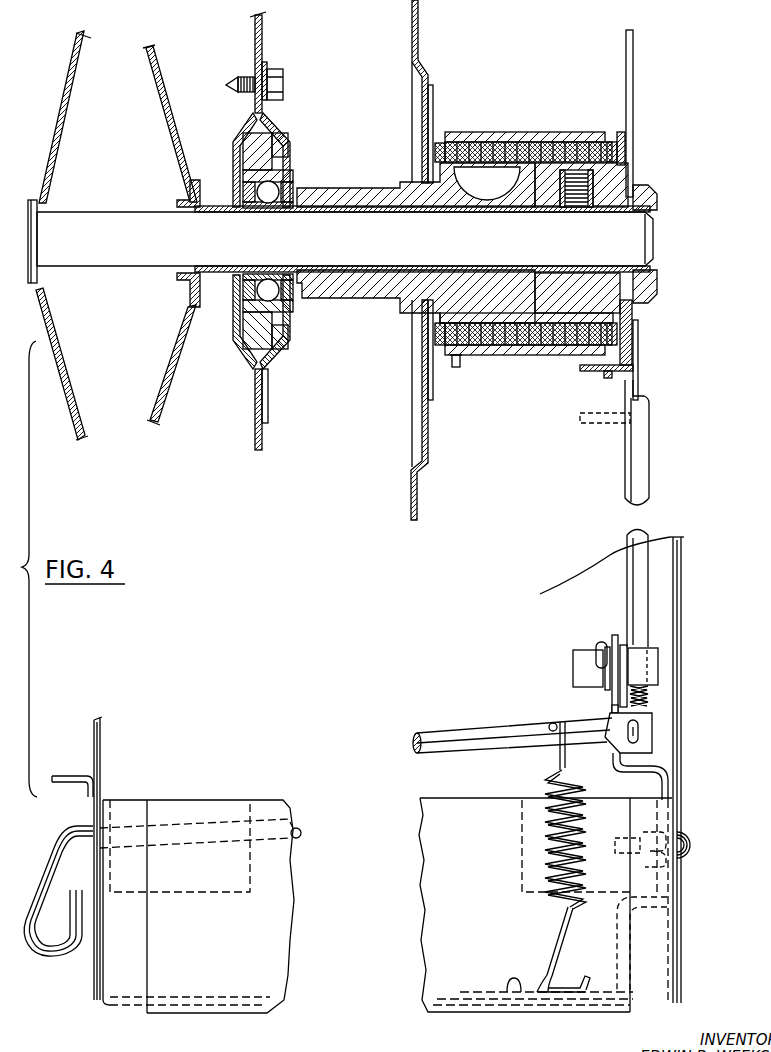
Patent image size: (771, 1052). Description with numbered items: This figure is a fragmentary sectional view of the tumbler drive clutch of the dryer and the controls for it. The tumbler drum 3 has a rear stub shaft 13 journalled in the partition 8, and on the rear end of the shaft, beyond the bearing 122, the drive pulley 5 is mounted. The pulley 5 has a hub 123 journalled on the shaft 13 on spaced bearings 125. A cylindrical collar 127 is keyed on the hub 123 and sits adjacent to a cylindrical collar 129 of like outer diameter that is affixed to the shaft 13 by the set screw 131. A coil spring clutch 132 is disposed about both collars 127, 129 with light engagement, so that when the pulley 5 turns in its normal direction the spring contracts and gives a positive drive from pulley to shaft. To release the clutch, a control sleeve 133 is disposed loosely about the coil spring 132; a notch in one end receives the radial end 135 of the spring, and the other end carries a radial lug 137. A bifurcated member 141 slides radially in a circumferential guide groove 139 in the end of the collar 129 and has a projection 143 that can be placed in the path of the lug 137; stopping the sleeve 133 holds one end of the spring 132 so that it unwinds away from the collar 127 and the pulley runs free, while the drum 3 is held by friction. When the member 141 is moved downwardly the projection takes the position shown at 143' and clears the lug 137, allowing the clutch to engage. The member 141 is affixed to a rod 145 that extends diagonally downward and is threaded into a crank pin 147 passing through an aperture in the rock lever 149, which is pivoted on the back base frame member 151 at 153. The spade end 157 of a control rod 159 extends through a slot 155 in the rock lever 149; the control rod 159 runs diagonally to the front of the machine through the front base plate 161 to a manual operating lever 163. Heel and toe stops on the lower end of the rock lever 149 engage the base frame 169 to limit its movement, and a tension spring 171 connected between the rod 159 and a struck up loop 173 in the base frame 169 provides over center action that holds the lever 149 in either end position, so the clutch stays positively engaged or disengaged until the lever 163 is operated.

The drum 3 is at (159, 66).
The drive pulley 5 is at (420, 330).
The partition 8 is at (262, 37).
The rear stub shaft 13 is at (630, 240).
The bearing 122 is at (293, 182).
The hub 123 is at (377, 190).
The spaced bearings 125 is at (473, 208).
The cylindrical collar 127 is at (491, 170).
The cylindrical collar 129 is at (615, 178).
The set screw 131 is at (592, 192).
The coil spring clutch 132 is at (533, 142).
The control sleeve 133 is at (517, 355).
The radial end 135 is at (456, 368).
The radial lug 137 is at (607, 382).
The circumferential guide groove 139 is at (657, 196).
The bifurcated member 141 is at (641, 94).
The projection 143 is at (589, 384).
The projection (lowered position) 143' is at (602, 435).
The rod 145 is at (650, 464).
The crank pin 147 is at (575, 657).
The rock lever 149 is at (613, 635).
The back base frame member 151 is at (667, 935).
The pivot 153 is at (688, 845).
The slot 155 is at (612, 708).
The spade end 157 is at (653, 731).
The control rod 159 is at (523, 742).
The front base plate 161 is at (98, 966).
The manual operating lever 163 is at (33, 958).
The base frame 169 is at (517, 993).
The tension spring 171 is at (540, 779).
The struck up loop 173 is at (540, 990).